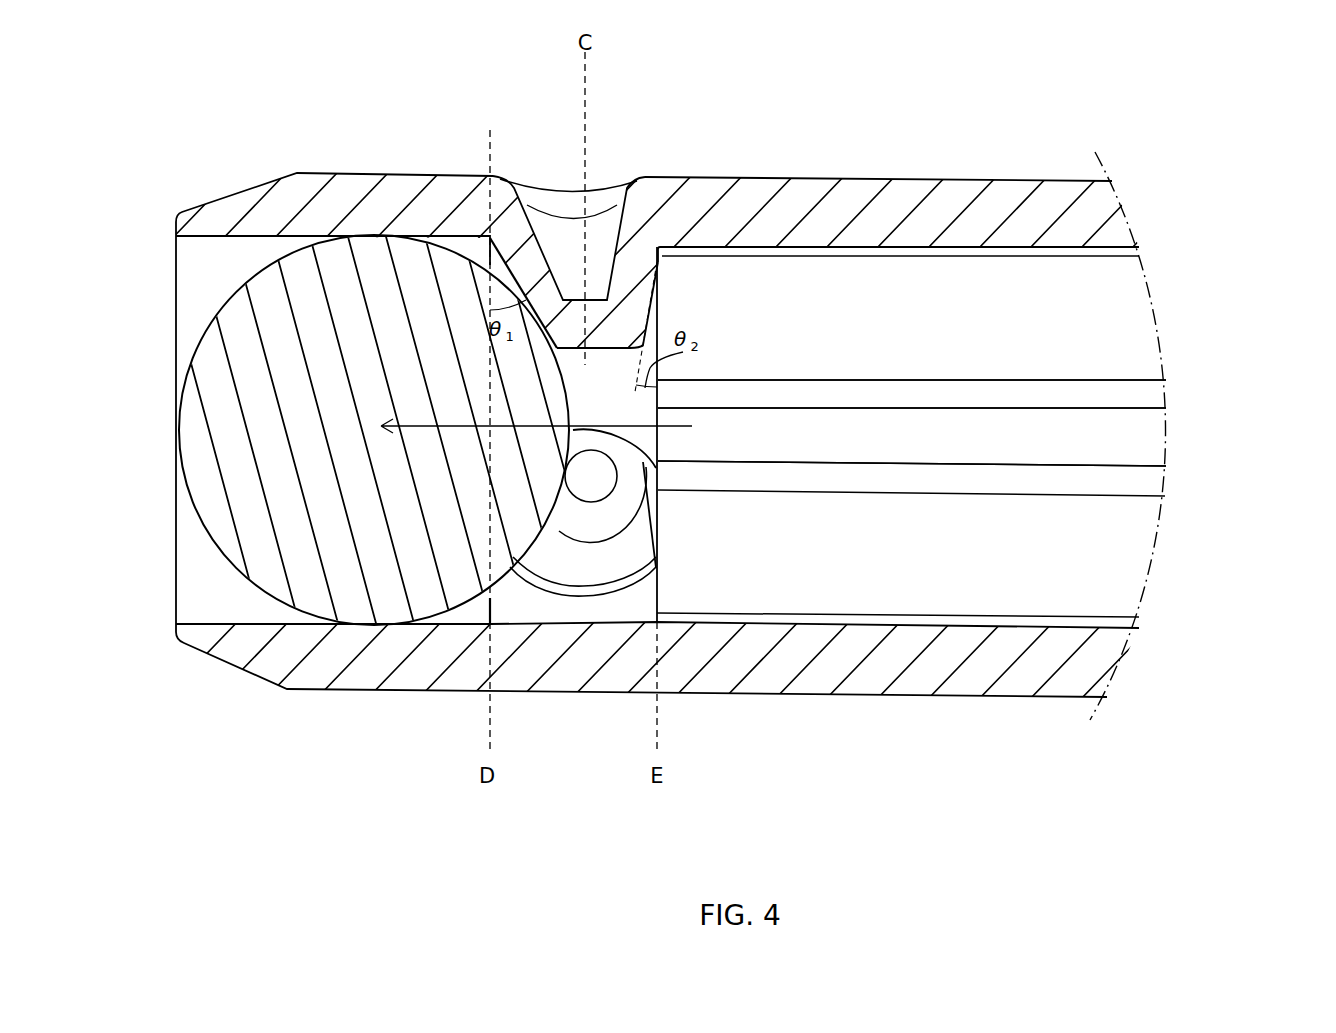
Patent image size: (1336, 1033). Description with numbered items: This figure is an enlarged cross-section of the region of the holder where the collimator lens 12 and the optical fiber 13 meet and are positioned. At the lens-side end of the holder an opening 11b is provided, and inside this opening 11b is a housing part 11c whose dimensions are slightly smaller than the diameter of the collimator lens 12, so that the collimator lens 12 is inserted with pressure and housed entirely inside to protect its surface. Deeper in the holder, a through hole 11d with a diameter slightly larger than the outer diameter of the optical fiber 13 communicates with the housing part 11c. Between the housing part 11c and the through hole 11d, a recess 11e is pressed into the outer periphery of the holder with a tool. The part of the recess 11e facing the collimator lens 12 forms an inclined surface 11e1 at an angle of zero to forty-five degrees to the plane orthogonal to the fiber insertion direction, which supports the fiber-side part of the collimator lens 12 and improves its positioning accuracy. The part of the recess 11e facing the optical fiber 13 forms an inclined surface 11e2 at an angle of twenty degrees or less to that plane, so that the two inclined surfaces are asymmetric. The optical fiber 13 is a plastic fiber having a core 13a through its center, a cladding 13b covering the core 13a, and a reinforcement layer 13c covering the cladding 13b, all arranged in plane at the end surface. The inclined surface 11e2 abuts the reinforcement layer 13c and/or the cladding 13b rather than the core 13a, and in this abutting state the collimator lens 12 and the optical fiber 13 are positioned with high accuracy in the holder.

The opening 11b is at (175, 272).
The housing part 11c is at (203, 590).
The through hole 11d is at (868, 247).
The recess 11e is at (608, 235).
The inclined surface 11e1 is at (487, 264).
The inclined surface 11e2 is at (648, 322).
The collimator lens 12 is at (200, 450).
The optical fiber 13 is at (1276, 337).
The core 13a is at (1130, 435).
The cladding 13b is at (1132, 395).
The reinforcement layer 13c is at (1127, 335).